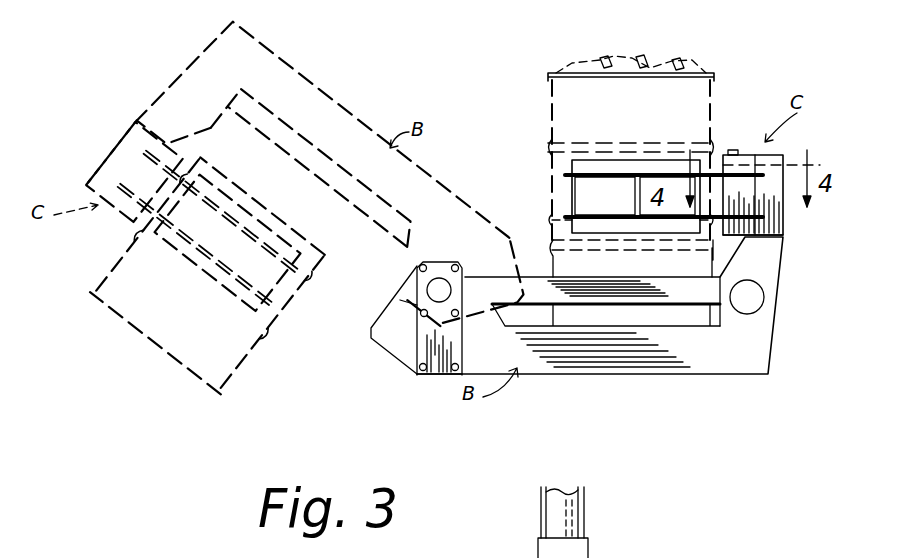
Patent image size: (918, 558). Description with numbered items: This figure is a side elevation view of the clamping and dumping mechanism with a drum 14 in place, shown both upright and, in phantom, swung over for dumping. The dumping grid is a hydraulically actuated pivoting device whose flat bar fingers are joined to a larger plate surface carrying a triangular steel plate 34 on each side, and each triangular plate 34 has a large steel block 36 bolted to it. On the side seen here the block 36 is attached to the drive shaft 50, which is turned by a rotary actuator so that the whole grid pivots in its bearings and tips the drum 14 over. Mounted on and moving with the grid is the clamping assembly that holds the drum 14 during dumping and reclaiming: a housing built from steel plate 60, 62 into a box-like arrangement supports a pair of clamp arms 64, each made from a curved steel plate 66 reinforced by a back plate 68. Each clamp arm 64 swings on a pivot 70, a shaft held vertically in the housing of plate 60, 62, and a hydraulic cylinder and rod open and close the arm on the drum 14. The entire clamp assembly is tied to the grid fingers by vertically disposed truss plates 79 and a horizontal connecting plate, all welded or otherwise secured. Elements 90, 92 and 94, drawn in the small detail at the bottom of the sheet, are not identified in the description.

The drum 14 is at (715, 103).
The triangular steel plate 34 is at (392, 343).
The steel block 36 is at (433, 376).
The drive shaft 50 is at (437, 278).
The steel plate 60 is at (766, 155).
The steel plate 62 is at (784, 219).
The clamp arm 64 is at (562, 195).
The curved steel plate 66 is at (612, 206).
The back plate 68 is at (569, 221).
The pivot 70 is at (733, 150).
The truss plate 79 is at (770, 263).
The post 90 is at (597, 530).
The guide 92 is at (548, 512).
The base 94 is at (592, 556).